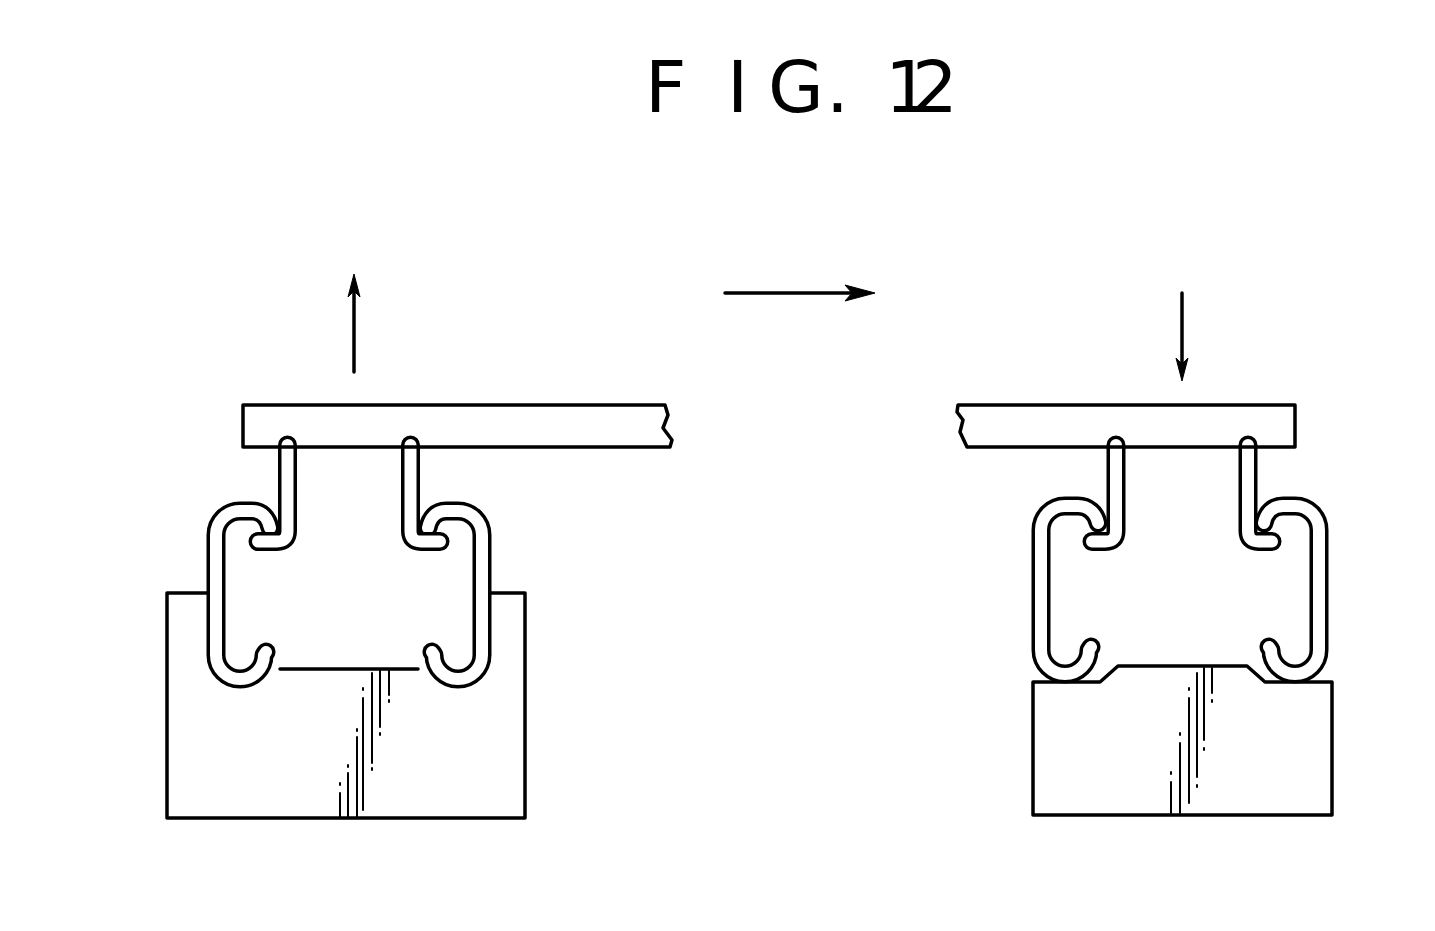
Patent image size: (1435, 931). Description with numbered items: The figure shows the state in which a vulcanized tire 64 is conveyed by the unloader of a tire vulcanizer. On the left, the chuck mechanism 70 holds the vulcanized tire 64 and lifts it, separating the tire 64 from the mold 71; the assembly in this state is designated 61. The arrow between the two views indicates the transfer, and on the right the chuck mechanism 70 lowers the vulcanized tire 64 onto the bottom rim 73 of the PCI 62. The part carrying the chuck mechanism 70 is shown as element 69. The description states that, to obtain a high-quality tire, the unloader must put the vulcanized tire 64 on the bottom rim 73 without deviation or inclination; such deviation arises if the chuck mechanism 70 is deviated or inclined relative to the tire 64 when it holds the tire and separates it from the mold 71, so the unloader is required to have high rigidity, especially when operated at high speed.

The assembly before attachment 61 is at (198, 429).
The PCI 62 is at (1277, 371).
The vulcanized tire 64 is at (481, 548).
The panel 69 is at (607, 420).
The chuck mechanism 70 is at (421, 481).
The mold 71 is at (514, 742).
The bottom rim 73 is at (1310, 742).